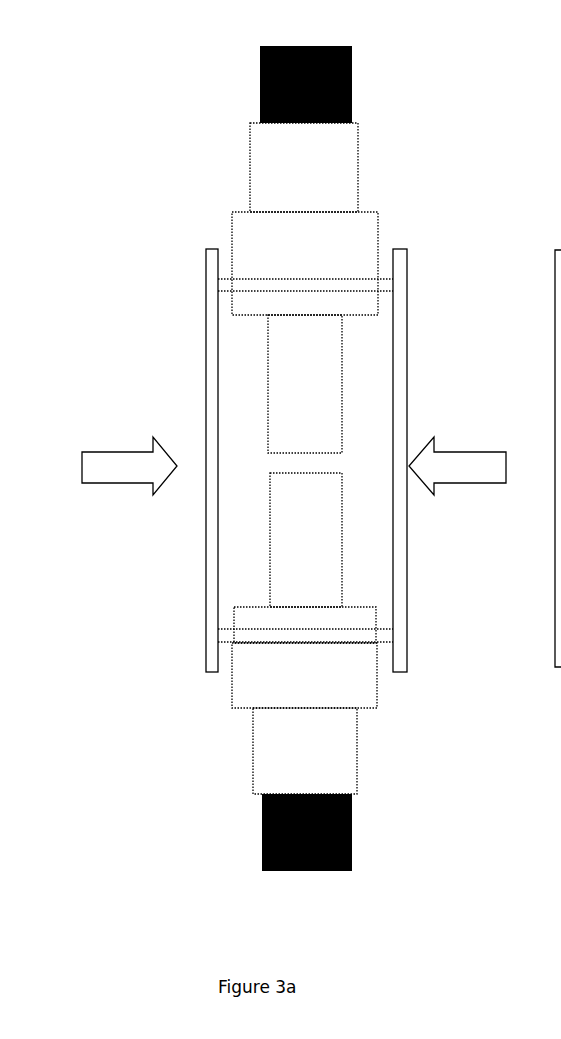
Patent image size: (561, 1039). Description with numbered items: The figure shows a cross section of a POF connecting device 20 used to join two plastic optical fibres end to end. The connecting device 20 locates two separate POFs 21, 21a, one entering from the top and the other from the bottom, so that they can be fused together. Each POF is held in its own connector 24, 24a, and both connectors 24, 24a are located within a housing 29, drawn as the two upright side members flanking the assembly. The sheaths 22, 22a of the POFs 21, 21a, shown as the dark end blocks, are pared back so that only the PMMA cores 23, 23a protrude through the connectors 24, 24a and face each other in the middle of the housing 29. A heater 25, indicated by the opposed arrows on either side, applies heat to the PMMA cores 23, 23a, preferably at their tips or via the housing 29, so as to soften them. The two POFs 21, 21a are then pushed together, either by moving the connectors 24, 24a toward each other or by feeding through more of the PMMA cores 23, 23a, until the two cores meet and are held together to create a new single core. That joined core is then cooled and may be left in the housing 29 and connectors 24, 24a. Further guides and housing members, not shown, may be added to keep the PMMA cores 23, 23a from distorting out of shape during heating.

The POF connecting device 20 is at (108, 185).
The POF 21 is at (226, 72).
The POF 21a is at (224, 833).
The sheath 22 is at (352, 84).
The sheath 22a is at (352, 813).
The PMMA core 23 is at (270, 428).
The PMMA core 23a is at (266, 500).
The connector 24 is at (343, 202).
The connector 24a is at (332, 728).
The heater 25 is at (120, 475).
The housing 29 is at (556, 388).